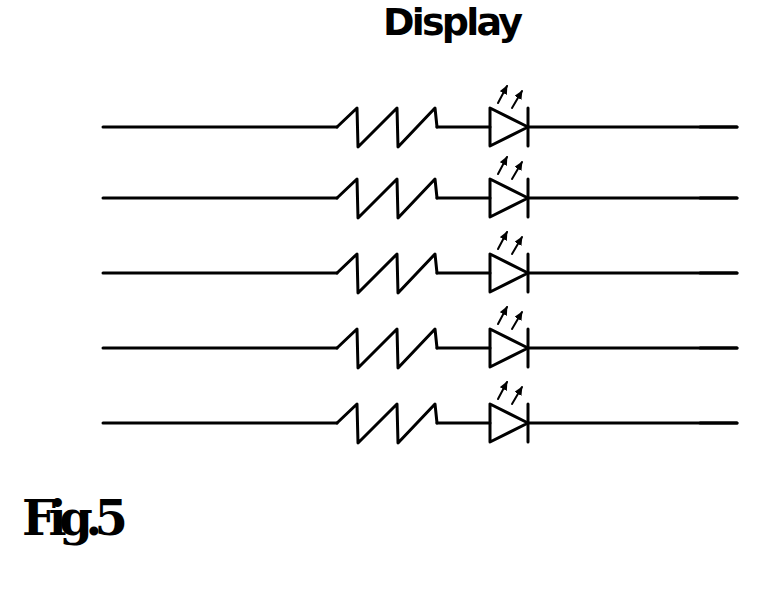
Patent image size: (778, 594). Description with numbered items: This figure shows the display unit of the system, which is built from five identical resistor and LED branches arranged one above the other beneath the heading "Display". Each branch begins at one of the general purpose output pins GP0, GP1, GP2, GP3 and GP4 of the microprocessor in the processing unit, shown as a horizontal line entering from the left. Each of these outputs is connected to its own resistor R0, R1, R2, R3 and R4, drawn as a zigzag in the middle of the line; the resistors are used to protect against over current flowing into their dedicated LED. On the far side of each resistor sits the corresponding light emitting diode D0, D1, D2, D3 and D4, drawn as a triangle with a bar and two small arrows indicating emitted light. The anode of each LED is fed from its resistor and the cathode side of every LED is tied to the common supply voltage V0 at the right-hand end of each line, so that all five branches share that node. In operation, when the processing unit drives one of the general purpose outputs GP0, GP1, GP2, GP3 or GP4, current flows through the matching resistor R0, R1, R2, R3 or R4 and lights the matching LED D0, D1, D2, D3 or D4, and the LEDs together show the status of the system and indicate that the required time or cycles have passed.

The general purpose output pin GP0 is at (420, 120).
The general purpose output pin GP1 is at (420, 191).
The general purpose output pin GP2 is at (420, 266).
The general purpose output pin GP3 is at (420, 341).
The general purpose output pin GP4 is at (420, 416).
The resistor R0 is at (353, 103).
The resistor R1 is at (353, 174).
The resistor R2 is at (353, 249).
The resistor R3 is at (353, 324).
The resistor R4 is at (353, 399).
The LED D0 is at (535, 99).
The LED D1 is at (535, 170).
The LED D2 is at (535, 245).
The LED D3 is at (535, 320).
The LED D4 is at (535, 395).
The supply voltage V0 is at (718, 268).